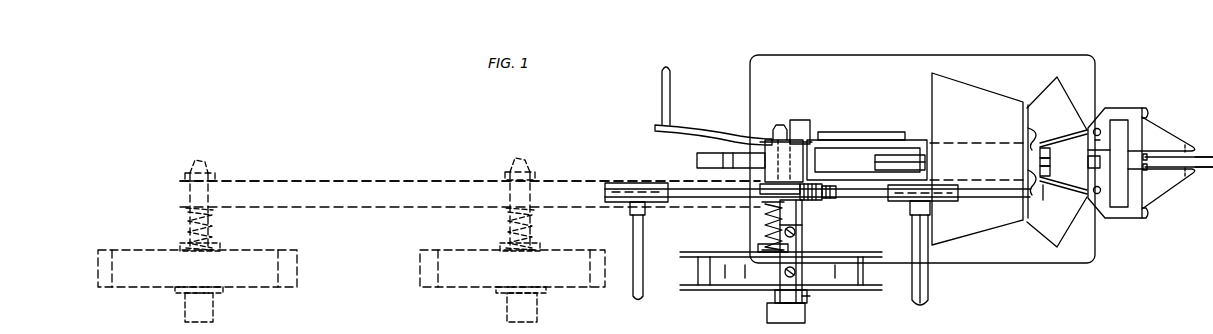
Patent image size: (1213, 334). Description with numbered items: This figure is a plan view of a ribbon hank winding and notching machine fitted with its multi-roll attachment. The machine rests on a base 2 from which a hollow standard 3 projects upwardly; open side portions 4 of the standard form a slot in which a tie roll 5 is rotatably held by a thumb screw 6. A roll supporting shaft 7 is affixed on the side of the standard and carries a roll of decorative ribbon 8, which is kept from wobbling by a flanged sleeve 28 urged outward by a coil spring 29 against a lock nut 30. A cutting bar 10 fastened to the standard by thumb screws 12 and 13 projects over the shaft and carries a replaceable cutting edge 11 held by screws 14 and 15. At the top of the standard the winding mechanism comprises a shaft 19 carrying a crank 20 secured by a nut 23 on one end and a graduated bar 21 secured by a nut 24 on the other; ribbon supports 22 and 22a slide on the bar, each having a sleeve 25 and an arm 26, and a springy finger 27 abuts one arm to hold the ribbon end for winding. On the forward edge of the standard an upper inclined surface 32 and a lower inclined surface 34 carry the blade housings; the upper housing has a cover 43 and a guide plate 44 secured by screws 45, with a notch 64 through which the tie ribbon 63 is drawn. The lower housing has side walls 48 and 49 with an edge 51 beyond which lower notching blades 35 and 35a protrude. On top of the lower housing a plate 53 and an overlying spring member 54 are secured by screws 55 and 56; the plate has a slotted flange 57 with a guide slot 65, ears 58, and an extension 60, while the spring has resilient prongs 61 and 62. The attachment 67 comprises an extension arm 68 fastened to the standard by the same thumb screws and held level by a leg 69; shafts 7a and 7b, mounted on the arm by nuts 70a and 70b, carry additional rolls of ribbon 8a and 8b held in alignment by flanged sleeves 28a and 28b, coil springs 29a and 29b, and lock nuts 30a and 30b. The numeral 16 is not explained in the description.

The base 2 is at (890, 62).
The standard 3 is at (893, 146).
The open side portions 4 is at (905, 161).
The tie roll 5 is at (700, 158).
The thumb screw 6 is at (800, 124).
The roll supporting shaft 7 is at (766, 210).
The shaft 7a is at (535, 217).
The shaft 7b is at (214, 217).
The roll of decorative ribbon 8 is at (700, 268).
The roll of ribbon 8a is at (470, 280).
The roll of ribbon 8b is at (153, 280).
The cutting bar 10 is at (778, 297).
The cutting edge 11 is at (803, 244).
The thumb screw 12 is at (812, 201).
The thumb screw 13 is at (836, 198).
The screw 14 is at (803, 226).
The screw 15 is at (784, 272).
The pin 16 is at (806, 297).
The shaft 19 is at (770, 140).
The crank 20 is at (661, 88).
The bar 21 is at (873, 198).
The ribbon support 22 is at (910, 210).
The ribbon support 22a is at (630, 210).
The nut 23 is at (780, 124).
The nut 24 is at (762, 194).
The sleeve 25 is at (632, 184).
The arm 26 is at (644, 237).
The finger 27 is at (912, 278).
The flanged sleeve 28 is at (758, 249).
The flanged sleeve 28a is at (542, 250).
The flanged sleeve 28b is at (222, 249).
The coil spring 29 is at (764, 228).
The coil spring 29a is at (506, 233).
The coil spring 29b is at (186, 222).
The lock nut 30 is at (792, 313).
The lock nut 30a is at (540, 305).
The lock nut 30b is at (216, 302).
The upper inclined surface 32 is at (988, 148).
The lower inclined surface 34 is at (1100, 168).
The lower notching blade 35 is at (1056, 176).
The lower notching blade 35a is at (1059, 151).
The cover 43 is at (955, 95).
The guide plate 44 is at (1022, 120).
The screws 45 is at (1056, 164).
The side wall 48 is at (1050, 225).
The side wall 49 is at (1050, 90).
The edge 51 is at (1044, 198).
The plate 53 is at (1125, 219).
The spring member 54 is at (1155, 186).
The screw 55 is at (1101, 190).
The screw 56 is at (1101, 132).
The slotted flange 57 is at (1109, 147).
The ears 58 is at (1148, 110).
The extension 60 is at (1204, 157).
The resilient prong 61 is at (1188, 172).
The resilient prong 62 is at (1188, 147).
The ribbon 63 is at (1204, 169).
The notch 64 is at (1026, 163).
The guide slot 65 is at (1143, 160).
The attachment 67 is at (406, 180).
The extension arm 68 is at (345, 181).
The leg 69 is at (233, 176).
The nut 70a is at (518, 164).
The nut 70b is at (193, 165).